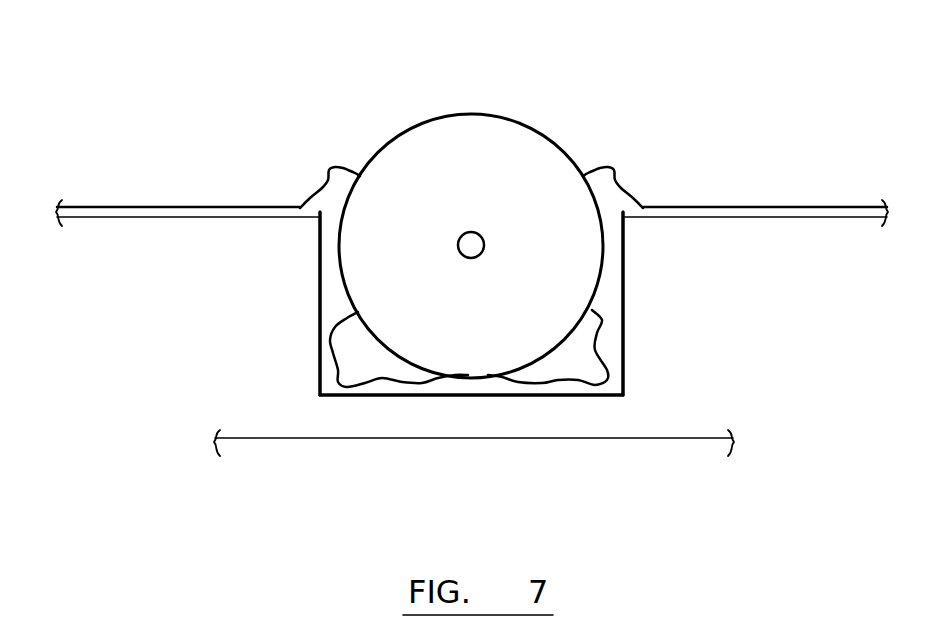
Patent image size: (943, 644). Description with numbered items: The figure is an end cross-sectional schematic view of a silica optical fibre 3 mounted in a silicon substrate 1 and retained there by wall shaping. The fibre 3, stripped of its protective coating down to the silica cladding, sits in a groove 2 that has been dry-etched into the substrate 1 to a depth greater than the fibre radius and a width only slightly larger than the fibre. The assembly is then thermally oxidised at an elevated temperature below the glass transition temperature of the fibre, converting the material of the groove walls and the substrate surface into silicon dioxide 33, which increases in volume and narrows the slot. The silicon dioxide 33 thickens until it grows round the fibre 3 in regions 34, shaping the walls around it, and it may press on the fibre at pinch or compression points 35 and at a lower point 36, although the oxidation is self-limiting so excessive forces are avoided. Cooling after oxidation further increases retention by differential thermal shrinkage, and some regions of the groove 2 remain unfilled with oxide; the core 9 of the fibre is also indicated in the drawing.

The silicon substrate 1 is at (233, 388).
The groove 2 is at (640, 373).
The silica optical fibre 3 is at (518, 118).
The core 9 is at (471, 232).
The silicon dioxide 33 is at (140, 208).
The regions 34 is at (314, 214).
The pinch points 35 is at (312, 270).
The lower point 36 is at (478, 388).